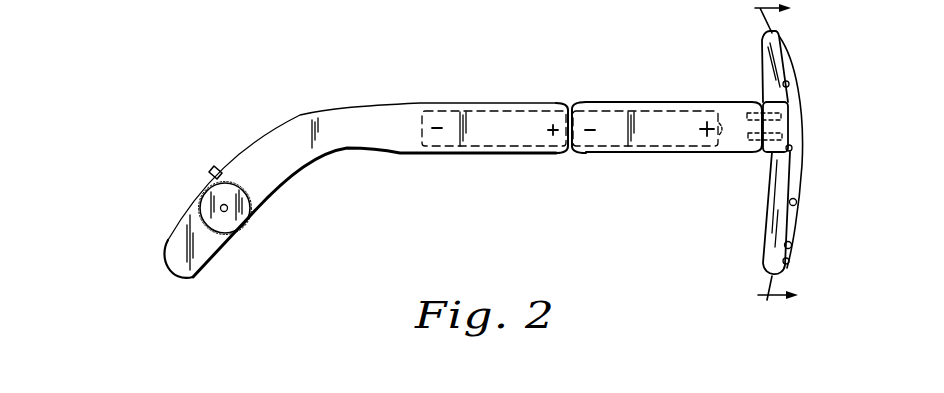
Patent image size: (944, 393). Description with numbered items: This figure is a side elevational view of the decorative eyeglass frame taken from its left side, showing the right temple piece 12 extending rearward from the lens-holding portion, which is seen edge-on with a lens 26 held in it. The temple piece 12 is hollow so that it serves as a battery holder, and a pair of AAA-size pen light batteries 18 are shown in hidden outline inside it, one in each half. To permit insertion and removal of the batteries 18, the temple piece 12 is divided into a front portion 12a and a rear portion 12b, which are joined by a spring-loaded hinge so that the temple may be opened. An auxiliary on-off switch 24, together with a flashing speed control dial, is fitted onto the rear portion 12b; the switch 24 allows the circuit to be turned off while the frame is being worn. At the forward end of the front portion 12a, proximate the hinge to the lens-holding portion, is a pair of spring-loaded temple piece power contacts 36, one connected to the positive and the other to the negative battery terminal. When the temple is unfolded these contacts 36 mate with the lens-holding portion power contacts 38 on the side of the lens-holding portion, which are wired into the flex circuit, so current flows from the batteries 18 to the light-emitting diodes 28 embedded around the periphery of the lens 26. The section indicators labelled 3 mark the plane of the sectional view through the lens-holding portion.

The right temple piece 12 is at (242, 228).
The front portion of temple piece 12a is at (646, 102).
The rear portion of temple piece 12b is at (307, 118).
The batteries 18 is at (613, 146).
The auxiliary on-off switch 24 is at (212, 171).
The lenses 26 is at (802, 177).
The light-emitting diodes 28 is at (795, 204).
The temple piece power contacts 36 is at (751, 122).
The lens-holding portion power contacts 38 is at (788, 116).
The section line 3- 3 is at (760, 156).